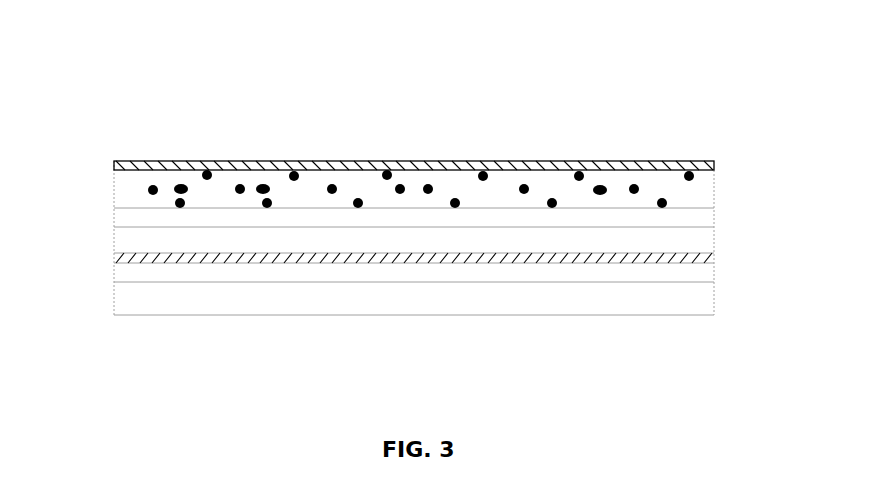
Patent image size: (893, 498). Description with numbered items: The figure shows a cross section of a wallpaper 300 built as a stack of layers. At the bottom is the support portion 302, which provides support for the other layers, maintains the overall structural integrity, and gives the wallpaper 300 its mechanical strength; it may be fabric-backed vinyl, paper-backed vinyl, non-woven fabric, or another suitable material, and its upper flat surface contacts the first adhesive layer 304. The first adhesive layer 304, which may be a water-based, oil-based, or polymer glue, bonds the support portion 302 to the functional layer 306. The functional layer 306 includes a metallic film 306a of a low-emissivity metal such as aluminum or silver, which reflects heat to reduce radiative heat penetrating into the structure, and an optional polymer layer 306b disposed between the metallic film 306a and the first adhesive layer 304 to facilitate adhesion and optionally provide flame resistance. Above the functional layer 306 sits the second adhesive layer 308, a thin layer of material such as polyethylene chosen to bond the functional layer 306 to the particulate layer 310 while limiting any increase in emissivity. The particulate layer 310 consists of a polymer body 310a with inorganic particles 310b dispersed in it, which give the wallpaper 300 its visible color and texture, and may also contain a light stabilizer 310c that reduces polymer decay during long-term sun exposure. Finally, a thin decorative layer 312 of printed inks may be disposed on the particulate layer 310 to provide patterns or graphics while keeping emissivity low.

The wallpaper 300 is at (408, 21).
The support portion 302 is at (714, 314).
The first adhesive layer 304 is at (714, 268).
The functional layer 306 is at (413, 250).
The metallic film 306a is at (127, 239).
The polymer layer 306b is at (127, 260).
The second adhesive layer 308 is at (714, 215).
The particulate layer 310 is at (461, 137).
The polymer body 310a is at (451, 183).
The inorganic particles 310b is at (153, 186).
The light stabilizer 310c is at (600, 186).
The decorative layer 312 is at (657, 162).